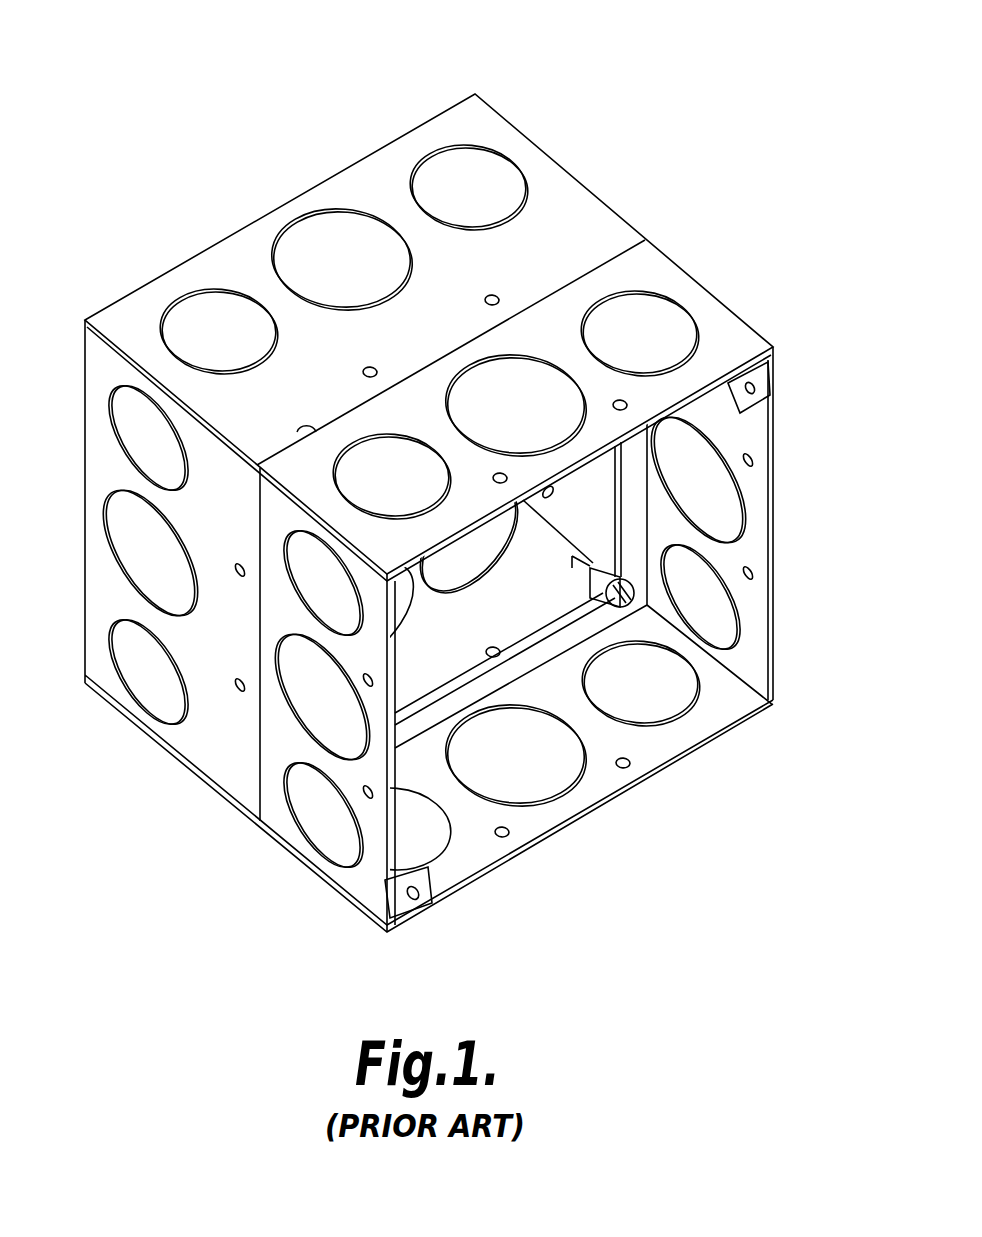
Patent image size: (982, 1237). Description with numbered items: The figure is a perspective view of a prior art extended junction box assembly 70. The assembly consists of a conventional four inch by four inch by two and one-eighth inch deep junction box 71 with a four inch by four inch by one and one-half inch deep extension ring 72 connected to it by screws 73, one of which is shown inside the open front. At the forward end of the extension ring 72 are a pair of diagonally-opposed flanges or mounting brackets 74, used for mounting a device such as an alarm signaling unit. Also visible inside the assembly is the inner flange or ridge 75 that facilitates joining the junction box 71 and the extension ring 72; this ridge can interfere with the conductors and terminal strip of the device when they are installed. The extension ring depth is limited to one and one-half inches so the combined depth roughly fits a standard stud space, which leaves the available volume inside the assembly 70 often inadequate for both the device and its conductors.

The extended junction box assembly 70 is at (583, 90).
The junction box 71 is at (583, 188).
The extension ring 72 is at (688, 276).
The screws 73 is at (632, 603).
The mounting brackets 74 is at (777, 418).
The inner flange or ridge 75 is at (547, 648).